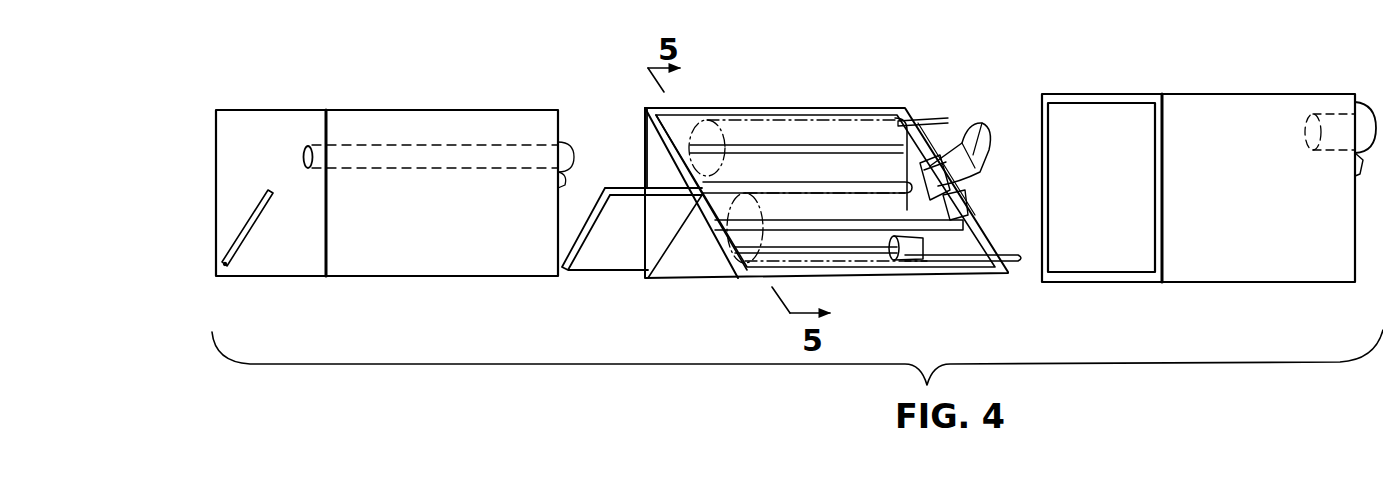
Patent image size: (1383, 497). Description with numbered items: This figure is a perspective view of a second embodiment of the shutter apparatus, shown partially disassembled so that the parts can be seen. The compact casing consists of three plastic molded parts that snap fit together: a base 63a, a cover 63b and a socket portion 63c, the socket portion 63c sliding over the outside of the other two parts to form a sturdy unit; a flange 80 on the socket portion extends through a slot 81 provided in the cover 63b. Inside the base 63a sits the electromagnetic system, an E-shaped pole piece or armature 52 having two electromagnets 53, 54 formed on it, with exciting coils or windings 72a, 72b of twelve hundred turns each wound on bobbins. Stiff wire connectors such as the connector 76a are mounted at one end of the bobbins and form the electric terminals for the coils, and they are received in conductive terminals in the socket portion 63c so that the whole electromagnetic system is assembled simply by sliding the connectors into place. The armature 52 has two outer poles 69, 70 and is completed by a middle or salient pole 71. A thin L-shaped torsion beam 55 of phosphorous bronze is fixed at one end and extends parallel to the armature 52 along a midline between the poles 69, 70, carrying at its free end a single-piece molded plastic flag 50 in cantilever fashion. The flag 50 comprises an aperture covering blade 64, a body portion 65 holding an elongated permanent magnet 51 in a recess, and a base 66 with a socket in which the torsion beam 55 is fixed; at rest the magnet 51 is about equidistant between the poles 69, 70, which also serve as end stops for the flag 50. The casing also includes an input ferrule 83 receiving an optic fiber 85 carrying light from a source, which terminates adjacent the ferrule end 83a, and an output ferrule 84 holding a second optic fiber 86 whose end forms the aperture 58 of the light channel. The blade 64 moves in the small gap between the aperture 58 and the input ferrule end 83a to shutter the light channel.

The flag 50 is at (977, 144).
The permanent magnet 51 is at (930, 182).
The armature 52 is at (784, 131).
The electromagnet 53 is at (798, 138).
The electromagnet 54 is at (820, 268).
The torsion beam 55 is at (852, 250).
The aperture 58 is at (1307, 138).
The base 63a is at (697, 292).
The cover 63b is at (403, 299).
The socket portion 63c is at (1222, 298).
The aperture covering blade 64 is at (988, 130).
The body portion 65 is at (952, 202).
The base 66 is at (913, 252).
The outer pole 69 is at (940, 120).
The outer pole 70 is at (977, 227).
The salient pole 71 is at (862, 183).
The winding 72a is at (808, 127).
The winding 72b is at (757, 263).
The wire connector 76a is at (947, 117).
The flange 80 is at (598, 255).
The slot 81 is at (243, 249).
The input ferrule 83 is at (556, 156).
The input ferrule end 83a is at (562, 183).
The output ferrule 84 is at (1360, 170).
The optic fiber 85 is at (300, 158).
The optic fiber 86 is at (1337, 113).